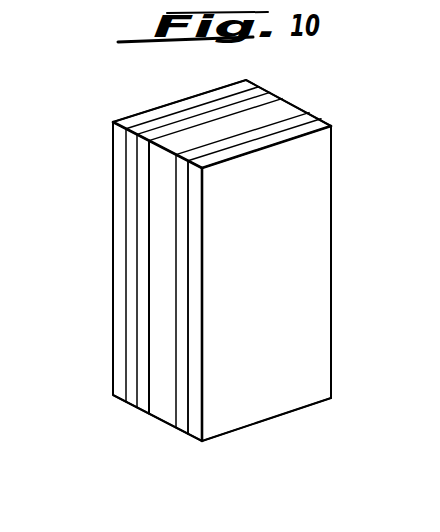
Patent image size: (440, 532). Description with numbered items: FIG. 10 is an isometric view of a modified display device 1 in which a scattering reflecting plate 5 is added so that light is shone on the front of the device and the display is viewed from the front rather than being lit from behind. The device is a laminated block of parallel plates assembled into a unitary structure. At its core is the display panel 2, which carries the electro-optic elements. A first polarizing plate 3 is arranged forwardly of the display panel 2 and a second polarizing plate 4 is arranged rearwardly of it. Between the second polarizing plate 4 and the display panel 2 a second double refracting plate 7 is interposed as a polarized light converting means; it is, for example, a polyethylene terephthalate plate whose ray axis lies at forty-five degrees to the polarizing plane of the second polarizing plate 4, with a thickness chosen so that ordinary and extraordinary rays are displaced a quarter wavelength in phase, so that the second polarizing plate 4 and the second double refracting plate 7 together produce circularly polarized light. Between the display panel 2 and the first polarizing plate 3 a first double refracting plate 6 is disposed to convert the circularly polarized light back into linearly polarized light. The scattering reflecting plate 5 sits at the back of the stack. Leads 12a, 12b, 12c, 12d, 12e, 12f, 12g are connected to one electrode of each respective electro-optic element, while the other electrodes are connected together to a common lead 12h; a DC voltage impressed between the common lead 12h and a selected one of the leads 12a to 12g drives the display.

The display device 1 is at (298, 405).
The display panel 2 is at (163, 418).
The first polarizing plate 3 is at (196, 433).
The second polarizing plate 4 is at (128, 400).
The scattering reflecting plate 5 is at (120, 398).
The first double refracting plate 6 is at (178, 433).
The second double refracting plate 7 is at (140, 404).
The lead 12a is at (230, 55).
The lead 12b is at (163, 240).
The lead 12c is at (331, 182).
The lead 12d is at (331, 233).
The lead 12e is at (162, 332).
The lead 12f is at (331, 283).
The lead 12g is at (228, 432).
The common lead 12h is at (163, 285).